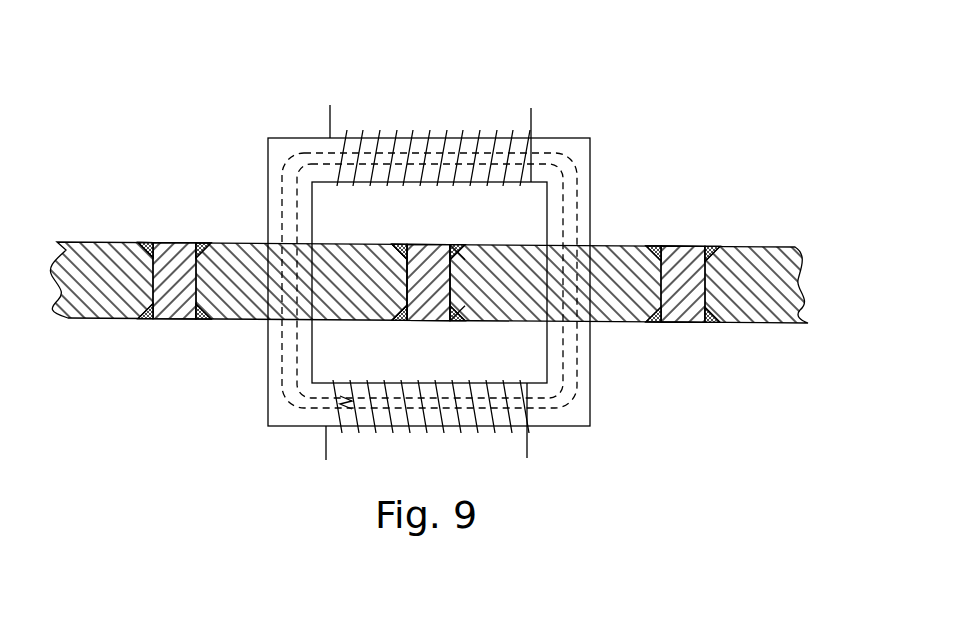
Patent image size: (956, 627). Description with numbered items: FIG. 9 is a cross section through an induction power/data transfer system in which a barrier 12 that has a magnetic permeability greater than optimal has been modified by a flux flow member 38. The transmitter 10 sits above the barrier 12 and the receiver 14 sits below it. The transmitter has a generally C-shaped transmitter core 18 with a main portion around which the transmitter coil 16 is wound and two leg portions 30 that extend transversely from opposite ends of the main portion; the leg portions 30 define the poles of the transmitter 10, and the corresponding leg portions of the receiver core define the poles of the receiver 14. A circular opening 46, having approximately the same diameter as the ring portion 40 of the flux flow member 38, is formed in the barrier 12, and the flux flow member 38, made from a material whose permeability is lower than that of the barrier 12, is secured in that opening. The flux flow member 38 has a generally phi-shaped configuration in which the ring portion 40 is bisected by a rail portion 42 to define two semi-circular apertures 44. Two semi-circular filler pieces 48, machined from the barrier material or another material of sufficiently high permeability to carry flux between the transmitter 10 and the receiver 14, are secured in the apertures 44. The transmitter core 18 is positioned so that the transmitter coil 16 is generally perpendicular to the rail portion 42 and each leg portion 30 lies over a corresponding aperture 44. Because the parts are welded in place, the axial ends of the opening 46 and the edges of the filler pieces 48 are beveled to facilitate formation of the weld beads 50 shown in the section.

The transmitter 10 is at (442, 252).
The barrier 12 is at (780, 247).
The receiver 14 is at (606, 420).
The transmitter coil 16 is at (442, 140).
The transmitter core 18 is at (296, 133).
The leg portion 30 is at (268, 185).
The flux flow member 38 is at (694, 330).
The ring portion 40 is at (173, 242).
The rail portion 42 is at (423, 243).
The semi-circular aperture 44 is at (402, 293).
The circular opening 46 is at (697, 277).
The filler piece 48 is at (338, 243).
The weld bead 50 is at (140, 318).